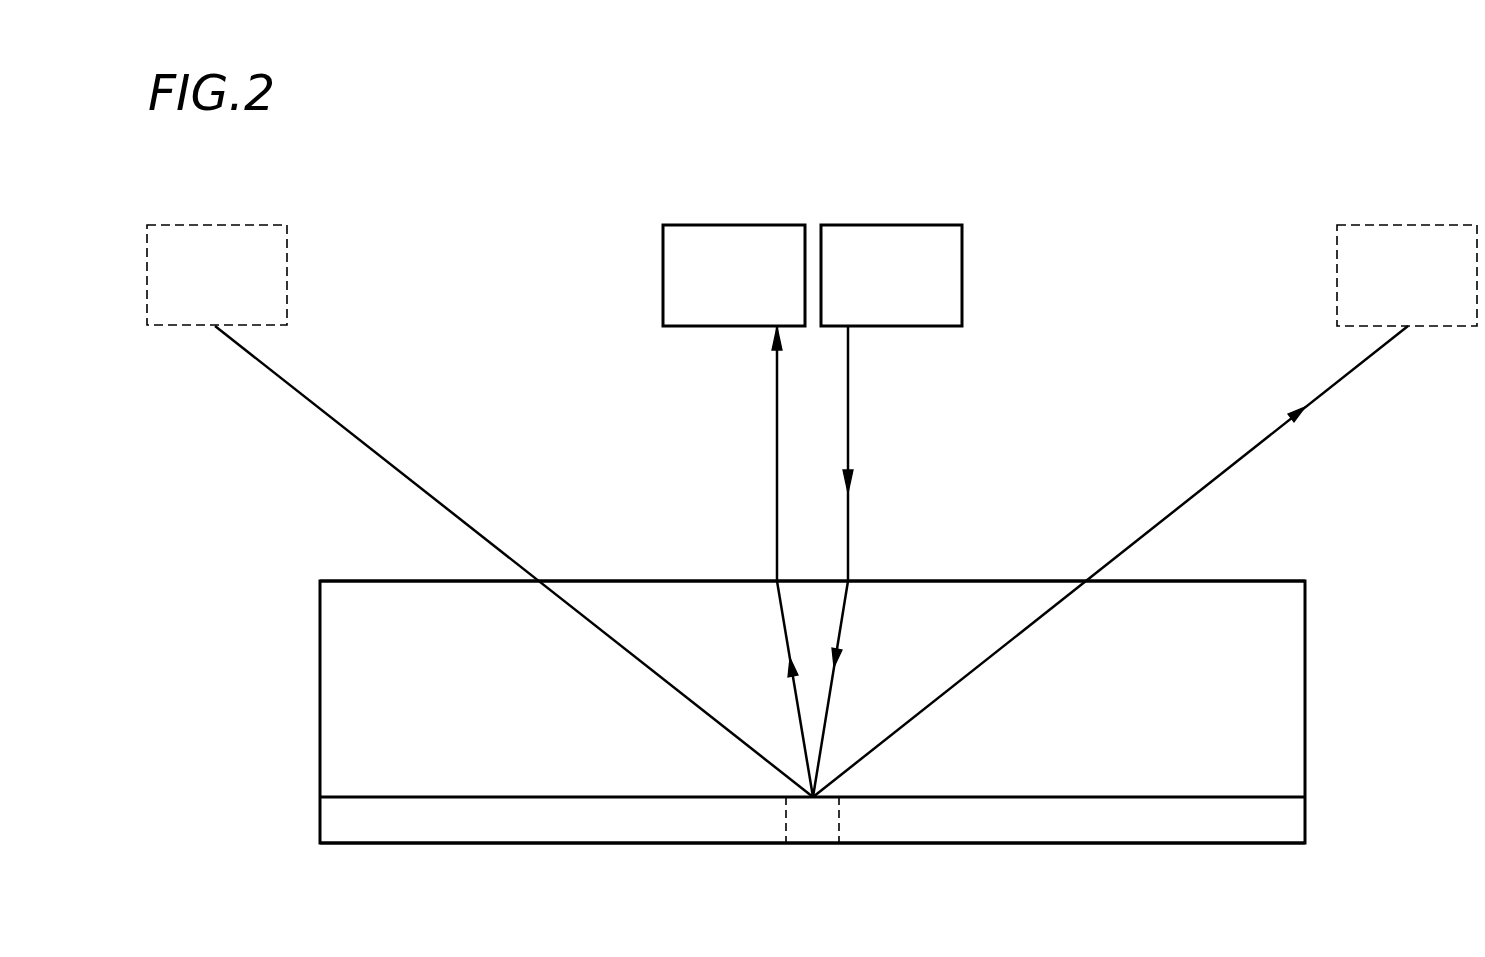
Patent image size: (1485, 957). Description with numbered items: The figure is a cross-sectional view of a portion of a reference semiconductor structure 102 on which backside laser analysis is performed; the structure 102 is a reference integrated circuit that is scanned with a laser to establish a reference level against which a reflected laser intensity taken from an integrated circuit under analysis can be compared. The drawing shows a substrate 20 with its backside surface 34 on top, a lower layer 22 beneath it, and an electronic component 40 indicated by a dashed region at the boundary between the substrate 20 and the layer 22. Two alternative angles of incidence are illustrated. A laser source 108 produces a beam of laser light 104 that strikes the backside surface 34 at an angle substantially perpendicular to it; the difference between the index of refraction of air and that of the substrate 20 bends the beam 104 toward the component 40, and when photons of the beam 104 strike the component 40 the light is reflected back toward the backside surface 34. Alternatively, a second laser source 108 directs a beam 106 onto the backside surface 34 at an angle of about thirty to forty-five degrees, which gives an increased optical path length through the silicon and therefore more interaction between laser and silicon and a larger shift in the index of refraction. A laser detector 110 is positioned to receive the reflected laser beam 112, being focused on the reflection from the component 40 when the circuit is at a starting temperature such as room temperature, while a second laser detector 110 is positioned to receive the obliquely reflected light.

The substrate 20 is at (1305, 652).
The lower layer 22 is at (1305, 812).
The backside surface 34 is at (1265, 581).
The component 40 is at (810, 843).
The structure 102 is at (792, 690).
The beam 104 is at (850, 457).
The beam 106 is at (1222, 470).
The laser source 108 is at (965, 297).
The laser detector 110 is at (288, 252).
The reflected laser beam 112 is at (775, 457).